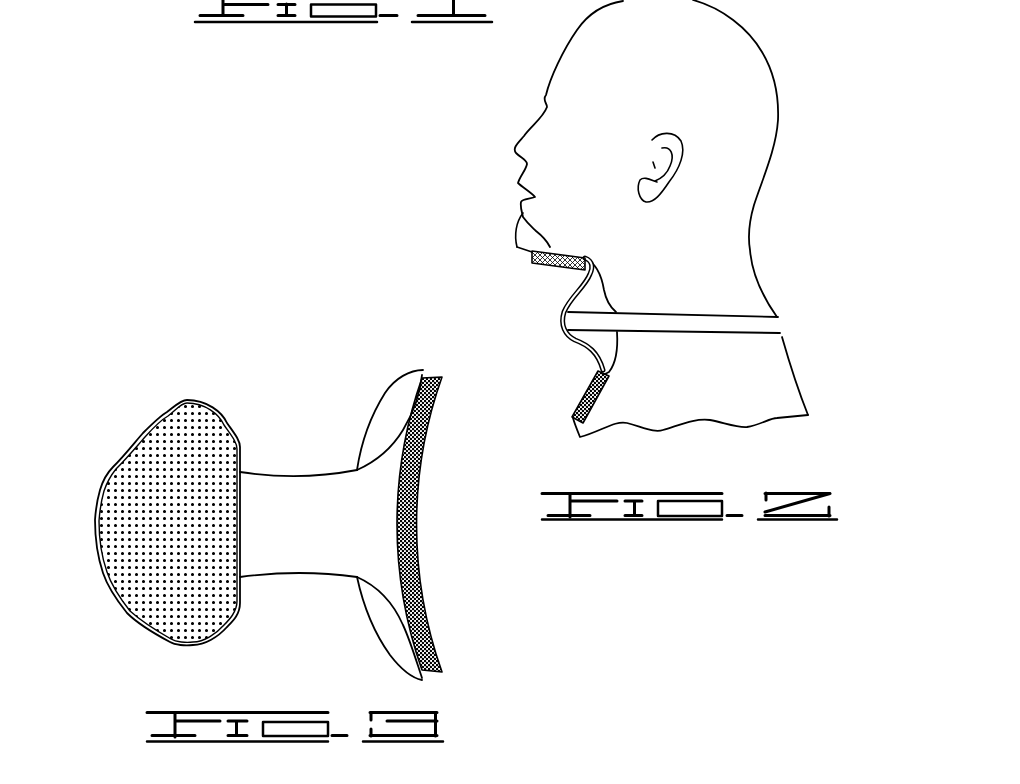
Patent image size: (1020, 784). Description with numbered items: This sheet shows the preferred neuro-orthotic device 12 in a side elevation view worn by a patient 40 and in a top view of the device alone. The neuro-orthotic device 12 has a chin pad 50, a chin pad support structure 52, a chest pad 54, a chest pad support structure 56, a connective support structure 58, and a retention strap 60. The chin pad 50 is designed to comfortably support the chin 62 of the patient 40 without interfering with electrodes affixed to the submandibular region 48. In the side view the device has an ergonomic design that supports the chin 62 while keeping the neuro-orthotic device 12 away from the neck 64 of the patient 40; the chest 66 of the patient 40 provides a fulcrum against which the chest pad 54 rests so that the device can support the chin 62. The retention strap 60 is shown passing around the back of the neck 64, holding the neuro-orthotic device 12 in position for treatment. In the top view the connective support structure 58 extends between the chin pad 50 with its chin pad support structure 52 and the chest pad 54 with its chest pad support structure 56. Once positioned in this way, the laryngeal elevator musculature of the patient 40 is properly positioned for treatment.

In FIG. 2, the neuro-orthotic device 12 is at (568, 300).
In FIG. 3, the neuro-orthotic device 12 is at (328, 560).
In FIG. 2, the patient 40 is at (737, 38).
In FIG. 2, the submandibular region 48 is at (527, 215).
In FIG. 2, the chin pad 50 is at (543, 267).
In FIG. 3, the chin pad 50 is at (180, 417).
In FIG. 3, the chin pad support structure 52 is at (125, 617).
In FIG. 2, the chest pad 54 is at (597, 390).
In FIG. 3, the chest pad 54 is at (422, 592).
In FIG. 3, the chest pad support structure 56 is at (403, 390).
In FIG. 3, the connective support structure 58 is at (258, 478).
In FIG. 2, the retention strap 60 is at (780, 327).
In FIG. 2, the chin 62 is at (517, 247).
In FIG. 2, the neck 64 is at (703, 278).
In FIG. 2, the chest 66 is at (607, 407).